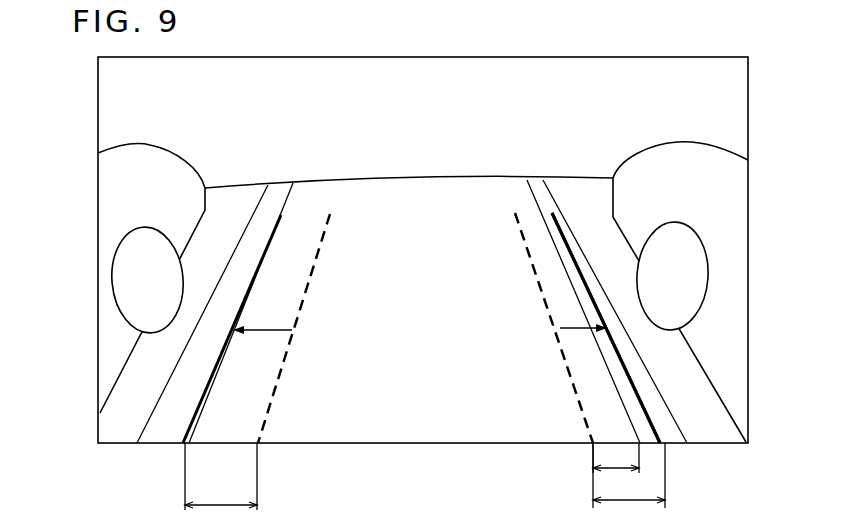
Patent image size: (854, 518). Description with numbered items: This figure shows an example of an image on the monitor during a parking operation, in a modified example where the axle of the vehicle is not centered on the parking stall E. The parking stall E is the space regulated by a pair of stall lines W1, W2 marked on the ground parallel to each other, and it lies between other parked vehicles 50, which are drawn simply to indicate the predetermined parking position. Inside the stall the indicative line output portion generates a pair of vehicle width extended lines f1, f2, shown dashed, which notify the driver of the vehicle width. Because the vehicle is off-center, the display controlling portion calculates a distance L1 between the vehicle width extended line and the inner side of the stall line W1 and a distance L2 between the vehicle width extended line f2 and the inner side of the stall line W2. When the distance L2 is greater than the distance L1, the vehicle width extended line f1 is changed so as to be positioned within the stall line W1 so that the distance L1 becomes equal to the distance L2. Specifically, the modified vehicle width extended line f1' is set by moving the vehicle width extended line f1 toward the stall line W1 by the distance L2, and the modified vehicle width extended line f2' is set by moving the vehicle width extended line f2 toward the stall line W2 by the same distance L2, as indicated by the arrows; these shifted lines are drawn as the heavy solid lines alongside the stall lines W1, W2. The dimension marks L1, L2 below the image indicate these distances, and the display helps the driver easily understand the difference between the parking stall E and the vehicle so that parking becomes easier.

The other parked vehicle 50 is at (170, 157).
The stall line W1 is at (550, 202).
The stall line W2 is at (273, 208).
The vehicle width extended line f1 is at (535, 328).
The vehicle width extended line f2 is at (313, 328).
The modified vehicle width extended line f1' is at (606, 324).
The modified vehicle width extended line f2' is at (202, 314).
The parking stall E is at (436, 237).
The distance L1 is at (616, 458).
The distance L2 is at (425, 476).